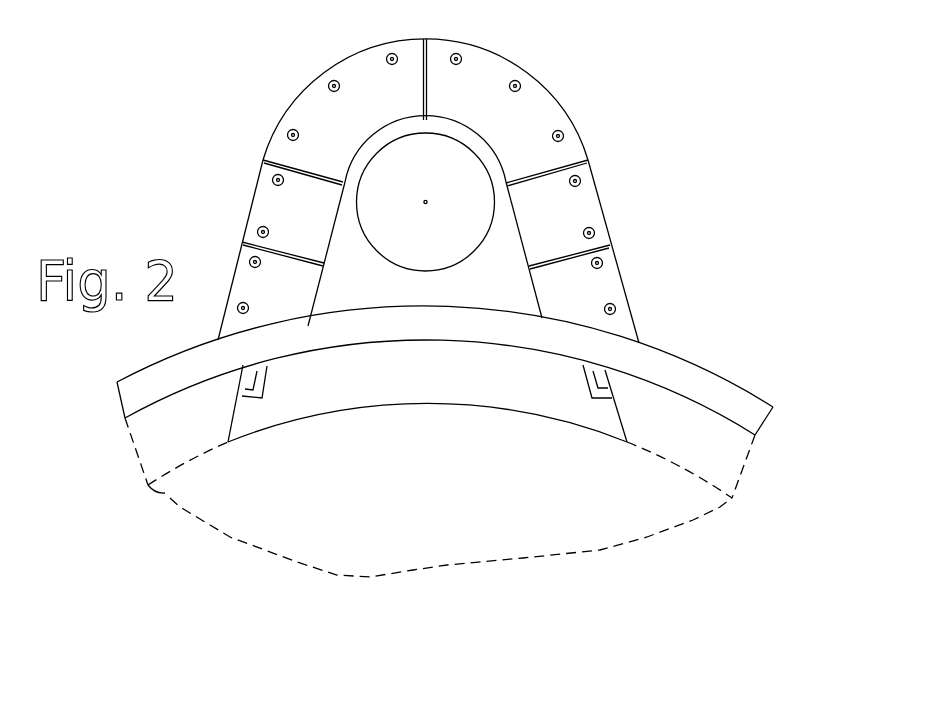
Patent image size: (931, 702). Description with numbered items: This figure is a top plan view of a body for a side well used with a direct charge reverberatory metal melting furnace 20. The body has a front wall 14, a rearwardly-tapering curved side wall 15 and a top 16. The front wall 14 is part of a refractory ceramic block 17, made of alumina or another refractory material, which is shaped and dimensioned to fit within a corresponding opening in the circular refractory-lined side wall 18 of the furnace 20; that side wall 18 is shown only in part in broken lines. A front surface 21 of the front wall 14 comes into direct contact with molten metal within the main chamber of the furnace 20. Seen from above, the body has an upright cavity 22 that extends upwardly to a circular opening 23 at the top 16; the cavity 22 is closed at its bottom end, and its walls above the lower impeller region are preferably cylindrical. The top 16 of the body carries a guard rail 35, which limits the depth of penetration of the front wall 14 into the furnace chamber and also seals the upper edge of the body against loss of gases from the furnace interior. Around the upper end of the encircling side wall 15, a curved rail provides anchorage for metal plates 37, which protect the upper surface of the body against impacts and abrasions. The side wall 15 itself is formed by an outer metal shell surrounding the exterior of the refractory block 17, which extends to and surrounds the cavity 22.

The front wall 14 is at (567, 415).
The rearwardly-tapering curved side wall 15 is at (553, 93).
The top 16 is at (485, 75).
The refractory ceramic block 17 is at (472, 400).
The circular refractory-lined side wall 18 is at (167, 448).
The direct charge reverberatory metal melting furnace 20 is at (287, 535).
The front surface 21 is at (240, 436).
The upright cavity 22 is at (440, 247).
The circular opening 23 is at (430, 272).
The guard rail 35 is at (673, 367).
The metal plates 37 is at (282, 215).